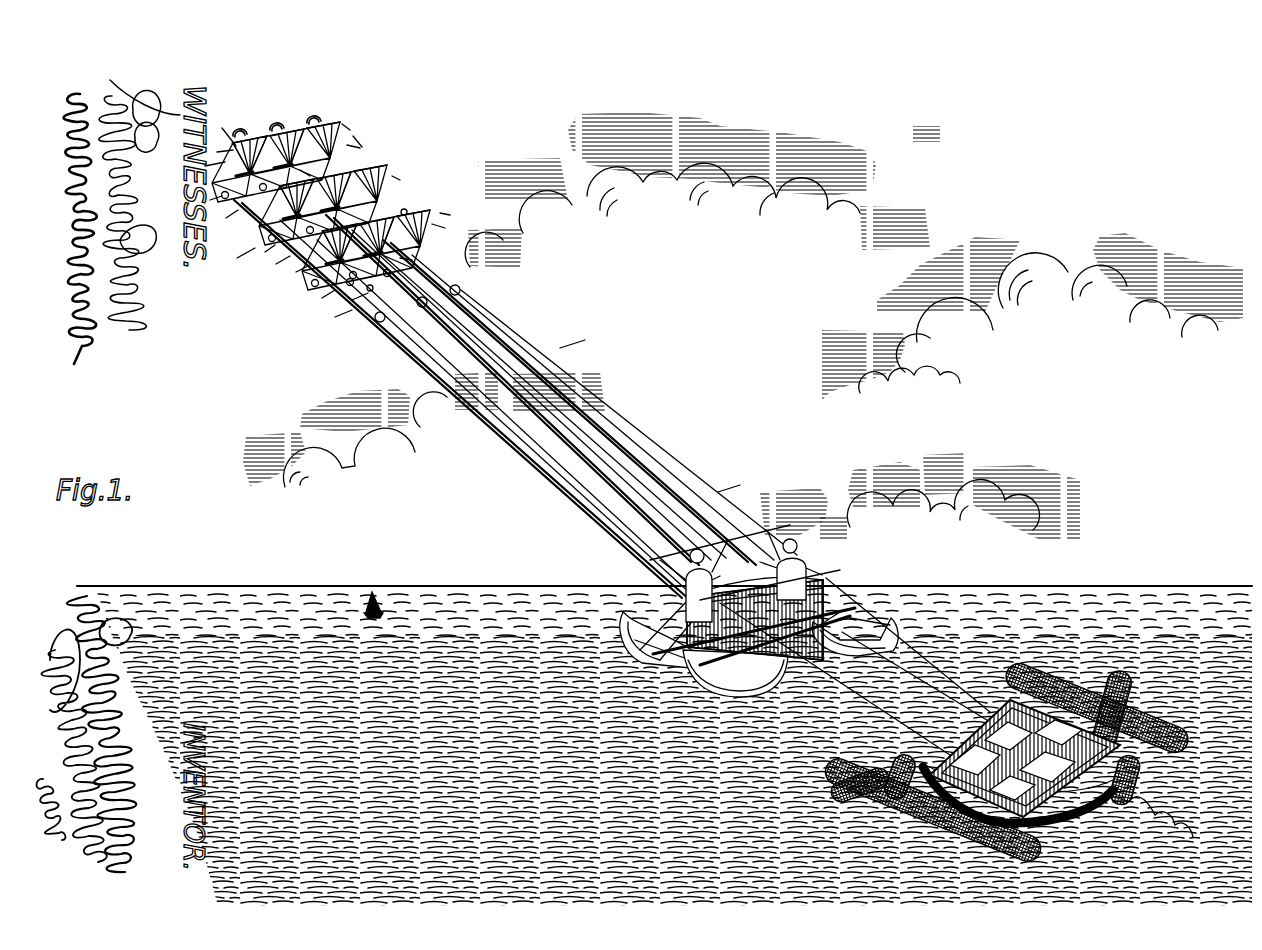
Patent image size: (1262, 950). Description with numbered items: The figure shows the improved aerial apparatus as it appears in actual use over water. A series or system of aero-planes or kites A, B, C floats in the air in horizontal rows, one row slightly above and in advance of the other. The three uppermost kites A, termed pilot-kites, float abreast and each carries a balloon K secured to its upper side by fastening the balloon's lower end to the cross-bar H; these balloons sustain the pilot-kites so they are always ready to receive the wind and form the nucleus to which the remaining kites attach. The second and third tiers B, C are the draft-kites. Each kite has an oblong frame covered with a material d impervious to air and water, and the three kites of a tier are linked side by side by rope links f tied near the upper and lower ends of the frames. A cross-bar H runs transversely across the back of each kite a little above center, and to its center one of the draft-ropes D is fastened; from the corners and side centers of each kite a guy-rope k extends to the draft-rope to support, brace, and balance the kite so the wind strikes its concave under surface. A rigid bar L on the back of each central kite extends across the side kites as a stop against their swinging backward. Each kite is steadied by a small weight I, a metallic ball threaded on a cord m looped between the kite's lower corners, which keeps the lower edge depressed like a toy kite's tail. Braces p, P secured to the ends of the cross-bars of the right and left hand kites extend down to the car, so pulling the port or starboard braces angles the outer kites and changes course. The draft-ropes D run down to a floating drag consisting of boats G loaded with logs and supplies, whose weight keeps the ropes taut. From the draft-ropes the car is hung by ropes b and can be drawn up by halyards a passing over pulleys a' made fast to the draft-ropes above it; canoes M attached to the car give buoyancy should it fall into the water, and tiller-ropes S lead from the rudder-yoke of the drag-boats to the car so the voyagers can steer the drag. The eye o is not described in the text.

The pilot-kites A is at (338, 120).
The draft-kites B is at (386, 165).
The draft-kites C is at (432, 212).
The draft-ropes D is at (580, 548).
The halyards a is at (538, 407).
The pulleys a' is at (402, 310).
The ropes b is at (810, 572).
The covering material d is at (331, 192).
The rope links f is at (387, 242).
The cross-bar H is at (324, 191).
The weight I is at (267, 249).
The balloon K is at (305, 120).
The guy-rope k is at (326, 210).
The rigid bar L is at (286, 154).
The cord m is at (286, 296).
The braces P is at (475, 354).
The canoes M is at (680, 657).
The tiller-ropes S is at (920, 650).
The braces p is at (862, 680).
The eye o is at (965, 672).
The boats G is at (938, 760).